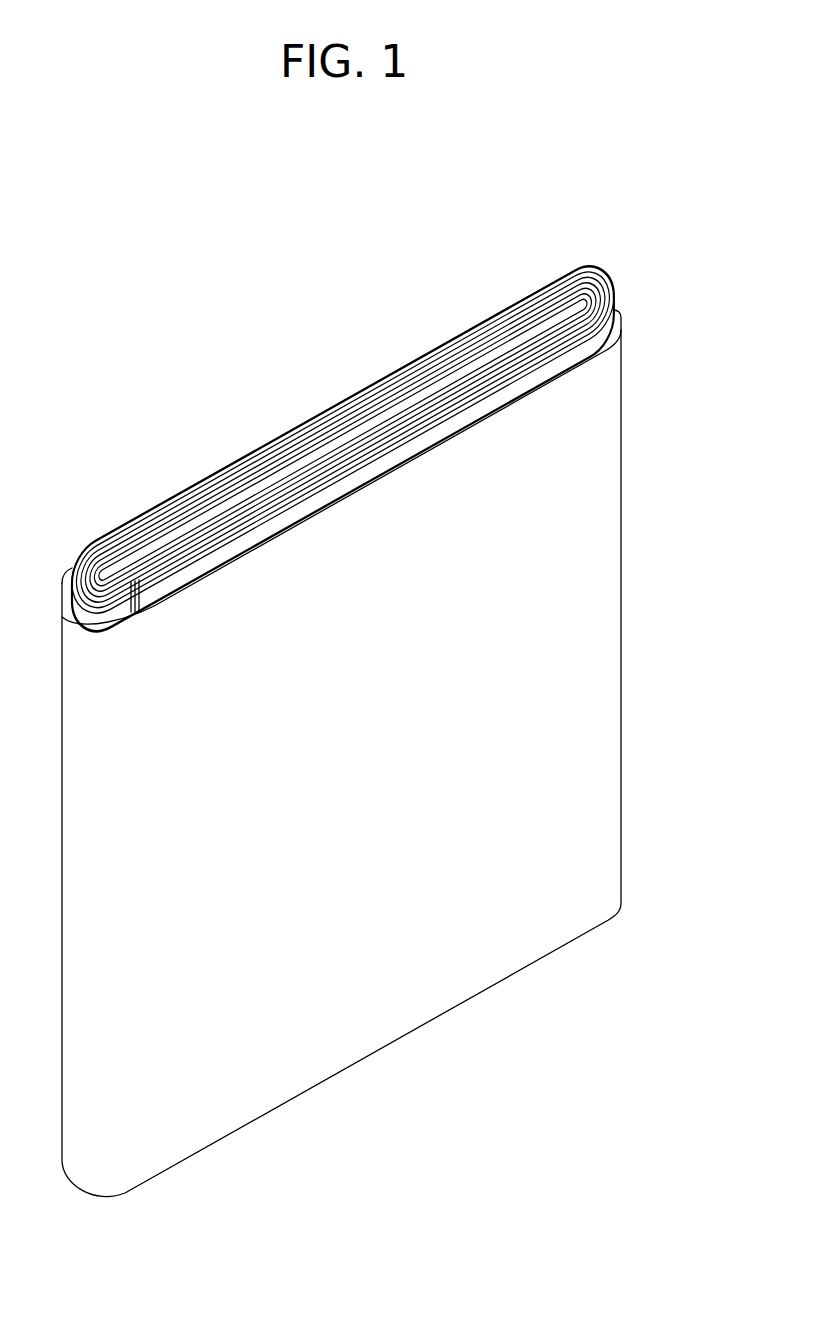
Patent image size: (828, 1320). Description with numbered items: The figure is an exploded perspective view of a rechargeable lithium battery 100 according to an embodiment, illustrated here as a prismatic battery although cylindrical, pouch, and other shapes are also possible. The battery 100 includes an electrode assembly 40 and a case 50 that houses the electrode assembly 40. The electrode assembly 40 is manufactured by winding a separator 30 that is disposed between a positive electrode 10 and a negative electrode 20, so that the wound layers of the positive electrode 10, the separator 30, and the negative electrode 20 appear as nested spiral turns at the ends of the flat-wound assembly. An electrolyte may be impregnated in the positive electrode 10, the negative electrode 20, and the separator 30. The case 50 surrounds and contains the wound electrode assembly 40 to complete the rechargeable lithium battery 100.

The rechargeable lithium battery 100 is at (355, 200).
The positive electrode 10 is at (614, 294).
The negative electrode 20 is at (584, 297).
The separator 30 is at (597, 287).
The electrode assembly 40 is at (307, 407).
The case 50 is at (604, 598).